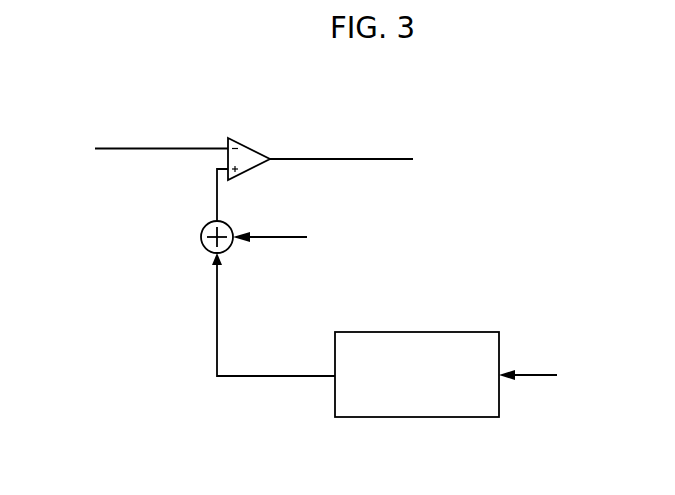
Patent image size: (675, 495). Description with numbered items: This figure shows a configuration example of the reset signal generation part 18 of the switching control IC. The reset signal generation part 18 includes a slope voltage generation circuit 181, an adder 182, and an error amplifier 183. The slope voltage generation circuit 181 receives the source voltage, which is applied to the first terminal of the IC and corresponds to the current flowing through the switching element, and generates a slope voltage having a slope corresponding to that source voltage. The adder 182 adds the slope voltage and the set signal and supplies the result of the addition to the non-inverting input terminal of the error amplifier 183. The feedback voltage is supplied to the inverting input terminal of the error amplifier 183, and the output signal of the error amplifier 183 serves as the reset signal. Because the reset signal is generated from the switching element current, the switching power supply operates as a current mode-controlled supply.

The reset signal generation part 18 is at (355, 80).
The slope voltage generation circuit 181 is at (420, 332).
The adder 182 is at (228, 226).
The error amplifier 183 is at (249, 145).